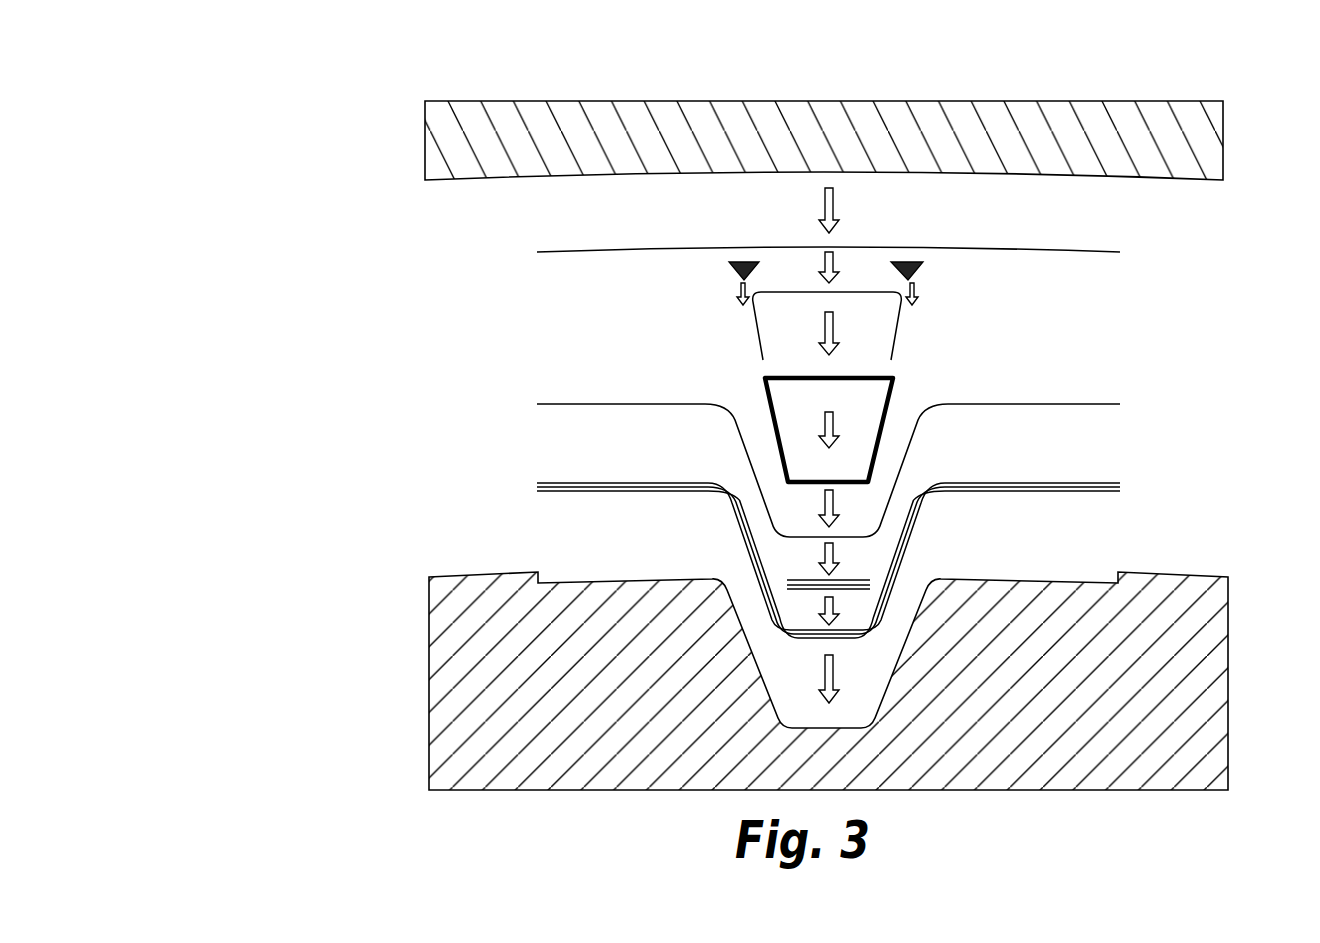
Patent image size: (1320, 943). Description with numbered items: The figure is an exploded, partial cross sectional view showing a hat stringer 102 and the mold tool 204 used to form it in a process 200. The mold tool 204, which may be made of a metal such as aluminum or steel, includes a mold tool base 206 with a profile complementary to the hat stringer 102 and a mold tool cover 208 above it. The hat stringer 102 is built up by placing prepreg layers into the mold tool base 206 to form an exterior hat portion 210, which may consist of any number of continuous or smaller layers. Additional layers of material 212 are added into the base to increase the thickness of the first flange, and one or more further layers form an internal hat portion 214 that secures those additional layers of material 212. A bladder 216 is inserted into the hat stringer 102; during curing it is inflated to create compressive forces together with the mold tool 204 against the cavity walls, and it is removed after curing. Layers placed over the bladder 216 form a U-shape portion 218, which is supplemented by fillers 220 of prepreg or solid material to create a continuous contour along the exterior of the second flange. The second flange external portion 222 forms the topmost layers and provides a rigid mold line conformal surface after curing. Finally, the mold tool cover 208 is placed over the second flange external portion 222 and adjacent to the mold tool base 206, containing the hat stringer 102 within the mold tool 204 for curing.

The process 200 is at (299, 62).
The mold tool cover 208 is at (467, 100).
The hat stringer 102 is at (1178, 293).
The mold tool 204 is at (388, 259).
The second flange external portion 222 is at (547, 252).
The fillers 220 is at (730, 272).
The U-shape portion 218 is at (902, 327).
The bladder 216 is at (764, 379).
The internal hat portion 214 is at (555, 404).
The exterior hat portion 210 is at (562, 483).
The additional layers of material 212 is at (798, 578).
The mold tool base 206 is at (455, 575).